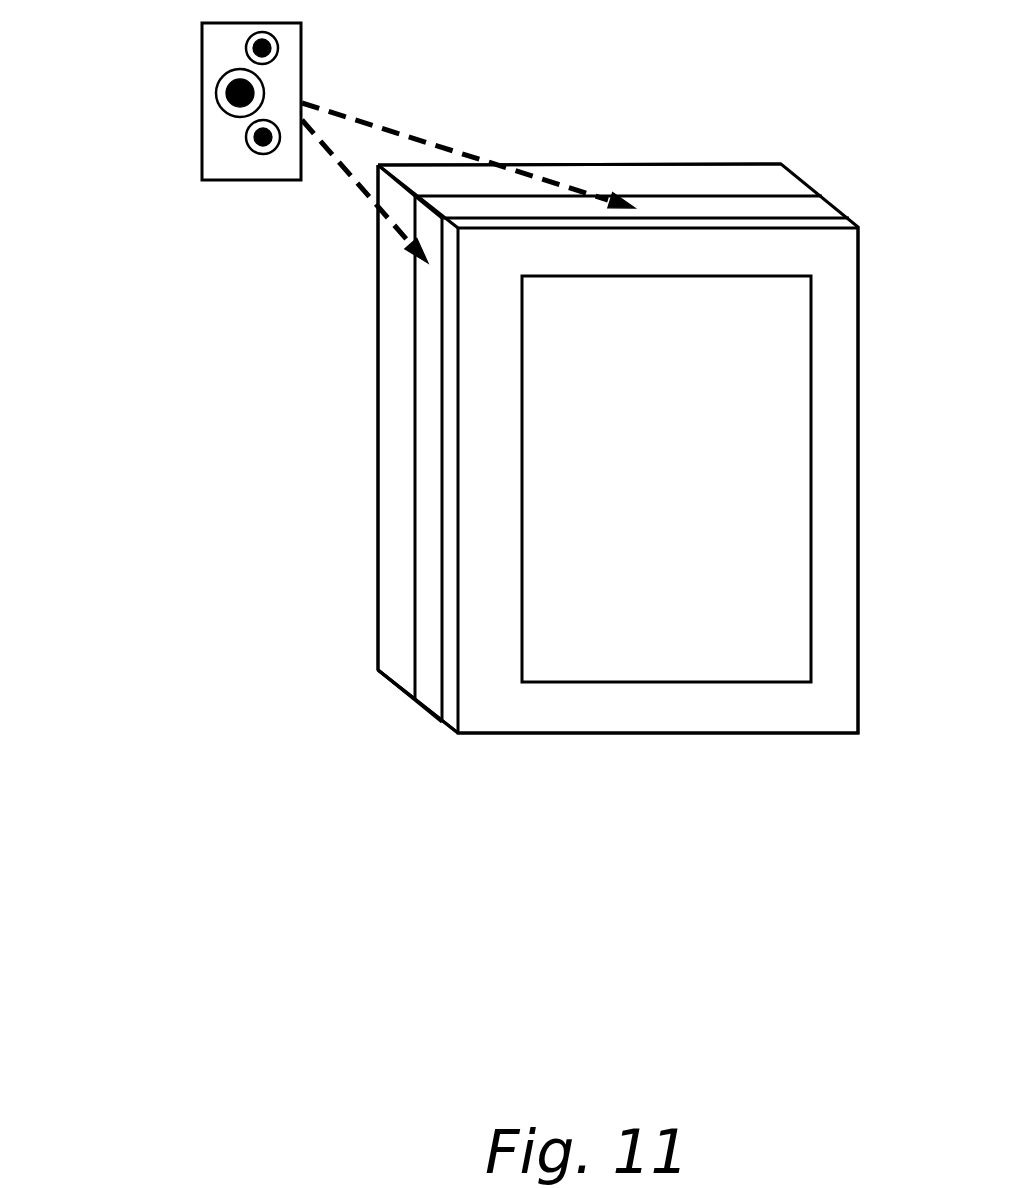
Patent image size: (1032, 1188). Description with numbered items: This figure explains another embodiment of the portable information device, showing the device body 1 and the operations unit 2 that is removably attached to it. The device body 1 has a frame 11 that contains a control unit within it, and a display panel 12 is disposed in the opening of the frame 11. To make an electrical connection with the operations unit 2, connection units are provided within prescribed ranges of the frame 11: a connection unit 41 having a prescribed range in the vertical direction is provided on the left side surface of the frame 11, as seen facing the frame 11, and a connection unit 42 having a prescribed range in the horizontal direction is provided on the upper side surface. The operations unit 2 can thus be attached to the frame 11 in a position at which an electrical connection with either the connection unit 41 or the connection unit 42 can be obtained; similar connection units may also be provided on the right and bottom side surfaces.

The device body 1 is at (745, 744).
The operations unit 2 is at (172, 120).
The frame 11 is at (675, 715).
The display panel 12 is at (582, 655).
The connection unit 41 is at (437, 687).
The connection unit 42 is at (800, 208).